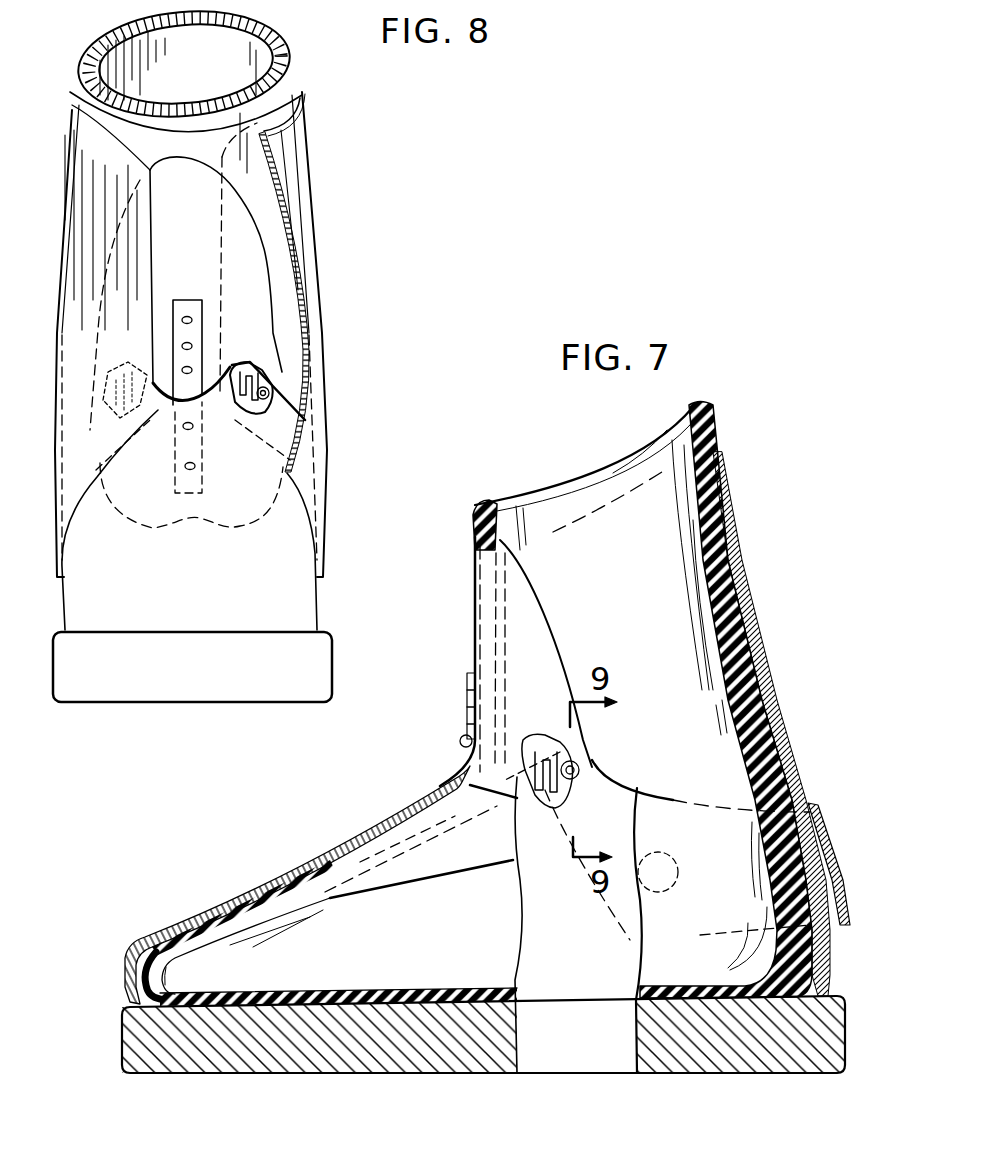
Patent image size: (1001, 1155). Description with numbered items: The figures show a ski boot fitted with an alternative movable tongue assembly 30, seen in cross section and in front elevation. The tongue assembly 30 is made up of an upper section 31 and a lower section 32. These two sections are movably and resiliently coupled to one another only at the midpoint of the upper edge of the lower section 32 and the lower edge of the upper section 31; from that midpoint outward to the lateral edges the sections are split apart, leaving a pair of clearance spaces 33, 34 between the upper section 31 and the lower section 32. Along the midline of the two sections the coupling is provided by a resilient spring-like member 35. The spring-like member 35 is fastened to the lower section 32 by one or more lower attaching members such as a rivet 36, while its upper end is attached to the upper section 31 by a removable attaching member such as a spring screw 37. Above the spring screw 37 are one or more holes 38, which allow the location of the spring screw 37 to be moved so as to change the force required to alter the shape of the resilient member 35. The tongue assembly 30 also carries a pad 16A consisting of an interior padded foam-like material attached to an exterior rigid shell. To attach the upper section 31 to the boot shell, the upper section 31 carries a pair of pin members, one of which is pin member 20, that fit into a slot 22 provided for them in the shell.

In FIG. 8, the pad 16A is at (284, 140).
In FIG. 7, the pad 16A is at (704, 616).
In FIG. 8, the pin member 20 is at (270, 392).
In FIG. 7, the pin member 20 is at (574, 770).
In FIG. 8, the slot 22 is at (263, 377).
In FIG. 7, the slot 22 is at (557, 757).
In FIG. 8, the tongue assembly 30 is at (243, 258).
In FIG. 7, the tongue assembly 30 is at (458, 757).
In FIG. 8, the upper section 31 is at (260, 283).
In FIG. 7, the upper section 31 is at (555, 662).
In FIG. 8, the lower section 32 is at (236, 507).
In FIG. 7, the lower section 32 is at (443, 863).
In FIG. 8, the clearance space 33 is at (296, 422).
In FIG. 7, the clearance space 33 is at (498, 802).
In FIG. 8, the clearance space 34 is at (100, 427).
In FIG. 8, the resilient spring-like member 35 is at (198, 300).
In FIG. 7, the resilient spring-like member 35 is at (405, 812).
In FIG. 8, the rivet 36 is at (195, 466).
In FIG. 7, the rivet 36 is at (362, 840).
In FIG. 8, the spring screw 37 is at (192, 370).
In FIG. 7, the spring screw 37 is at (460, 740).
In FIG. 8, the holes 38 is at (192, 320).
In FIG. 7, the holes 38 is at (467, 695).